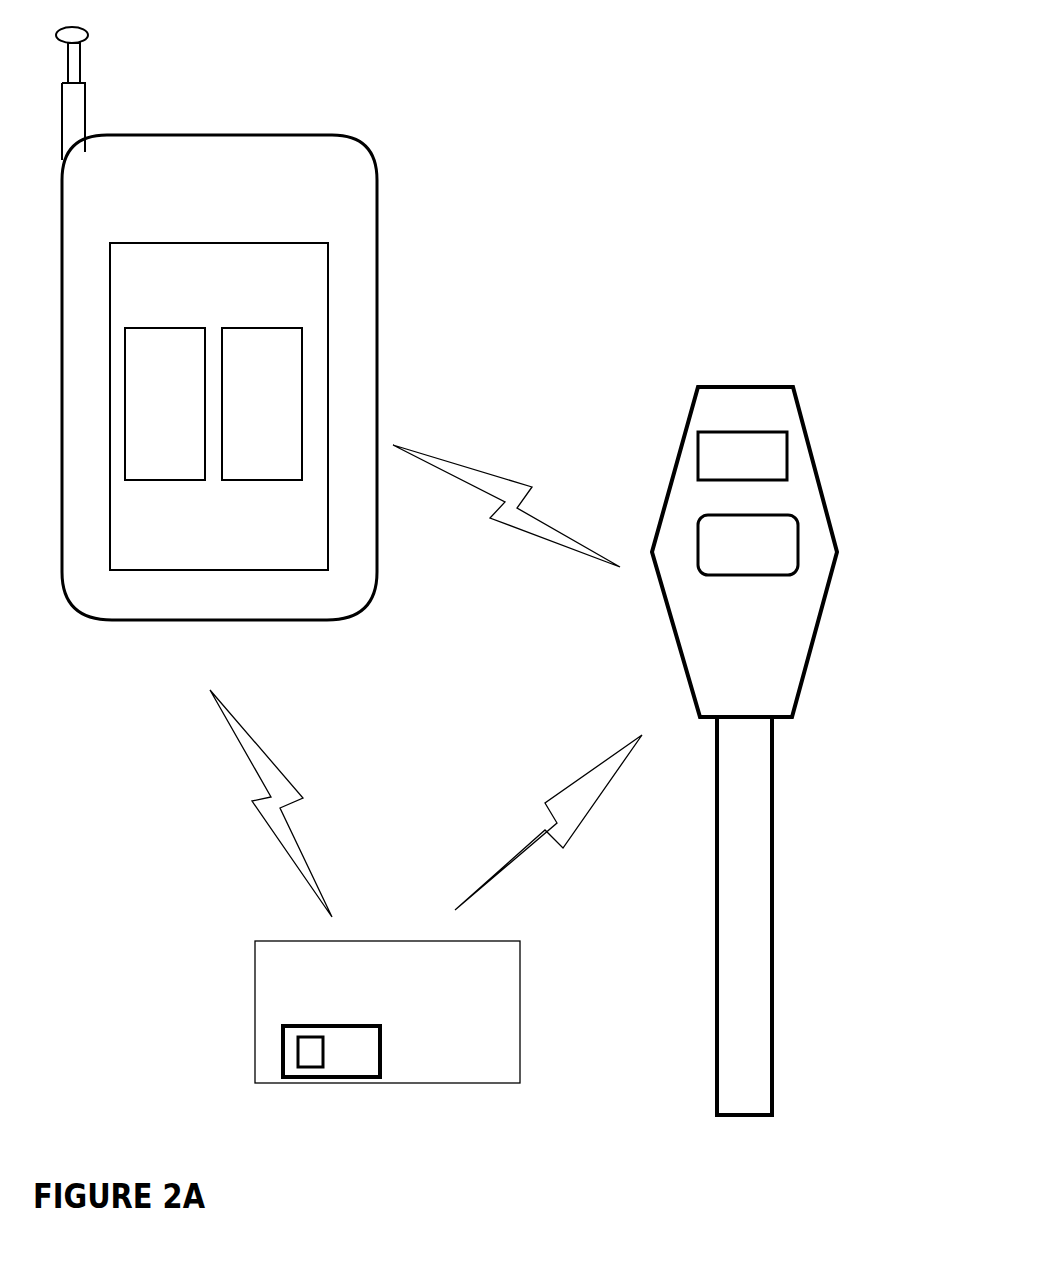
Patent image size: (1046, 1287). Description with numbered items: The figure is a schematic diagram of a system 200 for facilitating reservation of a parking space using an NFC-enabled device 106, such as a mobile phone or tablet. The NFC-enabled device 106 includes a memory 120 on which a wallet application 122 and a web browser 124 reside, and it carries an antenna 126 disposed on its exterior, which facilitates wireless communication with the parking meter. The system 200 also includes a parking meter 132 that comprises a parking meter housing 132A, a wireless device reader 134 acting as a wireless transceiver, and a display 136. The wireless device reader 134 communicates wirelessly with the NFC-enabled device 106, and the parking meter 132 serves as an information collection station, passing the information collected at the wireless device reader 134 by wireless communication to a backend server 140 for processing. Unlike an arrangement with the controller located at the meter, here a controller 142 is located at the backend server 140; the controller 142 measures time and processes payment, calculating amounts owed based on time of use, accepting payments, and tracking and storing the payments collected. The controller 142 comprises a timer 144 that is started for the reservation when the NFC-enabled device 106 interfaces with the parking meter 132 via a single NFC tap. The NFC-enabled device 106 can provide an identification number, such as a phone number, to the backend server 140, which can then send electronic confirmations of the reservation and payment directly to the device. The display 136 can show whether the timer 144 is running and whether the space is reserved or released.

The system 200 is at (231, 70).
The NFC-enabled device 106 is at (128, 137).
The antenna 126 is at (77, 52).
The memory 120 is at (219, 406).
The wallet application 122 is at (192, 480).
The web browser 124 is at (287, 480).
The parking meter 132 is at (777, 385).
The parking meter housing 132A is at (672, 478).
The display 136 is at (770, 483).
The wireless device reader 134 is at (800, 528).
The backend server 140 is at (520, 970).
The controller 142 is at (283, 1052).
The timer 144 is at (311, 1067).